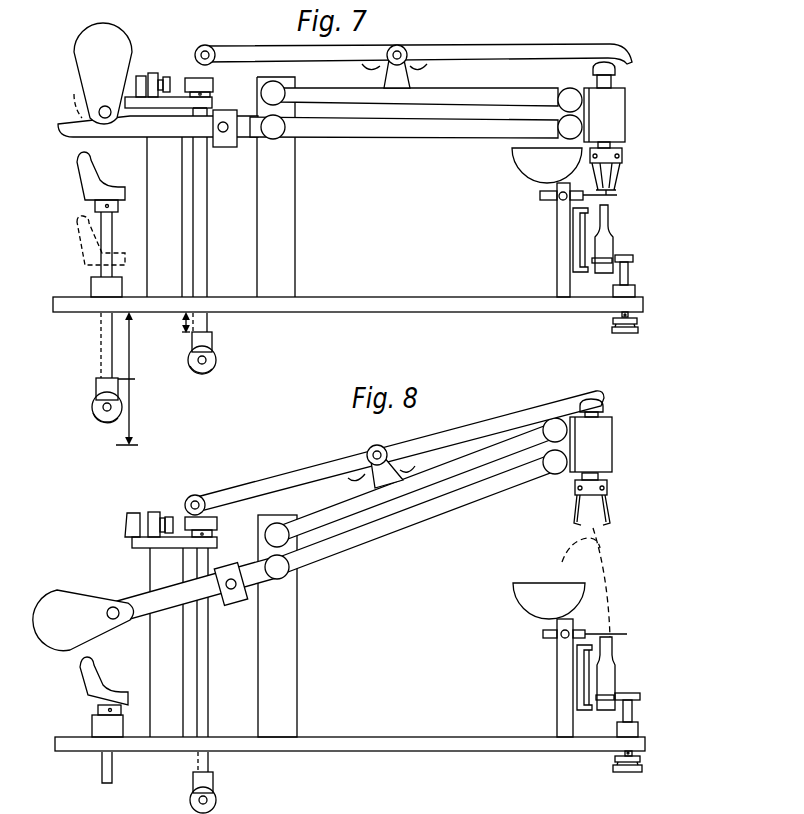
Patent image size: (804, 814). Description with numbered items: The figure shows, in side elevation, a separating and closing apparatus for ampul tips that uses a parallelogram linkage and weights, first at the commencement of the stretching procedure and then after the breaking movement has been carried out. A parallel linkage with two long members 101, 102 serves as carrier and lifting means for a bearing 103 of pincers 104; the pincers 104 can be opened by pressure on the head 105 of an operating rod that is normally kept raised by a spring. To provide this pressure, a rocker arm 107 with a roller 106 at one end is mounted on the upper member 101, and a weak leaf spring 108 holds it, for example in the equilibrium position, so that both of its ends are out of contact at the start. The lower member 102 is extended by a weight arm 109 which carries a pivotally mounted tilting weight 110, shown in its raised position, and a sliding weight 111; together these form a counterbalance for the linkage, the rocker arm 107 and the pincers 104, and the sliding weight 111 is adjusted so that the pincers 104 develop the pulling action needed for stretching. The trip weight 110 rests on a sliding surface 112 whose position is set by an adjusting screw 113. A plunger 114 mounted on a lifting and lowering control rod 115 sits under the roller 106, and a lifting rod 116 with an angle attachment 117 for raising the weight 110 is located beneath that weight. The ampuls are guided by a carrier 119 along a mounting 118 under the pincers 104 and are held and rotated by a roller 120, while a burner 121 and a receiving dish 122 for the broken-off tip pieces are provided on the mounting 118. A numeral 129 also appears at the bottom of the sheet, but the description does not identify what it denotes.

In FIG. 7, the upper member 101 is at (485, 96).
In FIG. 8, the upper member 101 is at (331, 508).
In FIG. 7, the lower member 102 is at (456, 132).
In FIG. 8, the lower member 102 is at (347, 547).
In FIG. 7, the bearing 103 is at (626, 114).
In FIG. 8, the bearing 103 is at (613, 441).
In FIG. 7, the pincers 104 is at (622, 182).
In FIG. 8, the pincers 104 is at (611, 512).
In FIG. 7, the head 105 is at (617, 72).
In FIG. 8, the head 105 is at (605, 403).
In FIG. 7, the roller 106 is at (207, 47).
In FIG. 8, the roller 106 is at (198, 494).
In FIG. 7, the rocker arm 107 is at (543, 46).
In FIG. 8, the rocker arm 107 is at (327, 458).
In FIG. 7, the leaf spring 108 is at (418, 64).
In FIG. 8, the leaf spring 108 is at (393, 450).
In FIG. 7, the weight arm 109 is at (133, 132).
In FIG. 8, the weight arm 109 is at (195, 590).
In FIG. 7, the tilting weight 110 is at (80, 48).
In FIG. 8, the tilting weight 110 is at (63, 598).
In FIG. 7, the sliding weight 111 is at (228, 148).
In FIG. 8, the sliding weight 111 is at (230, 584).
In FIG. 7, the sliding surface 112 is at (137, 76).
In FIG. 8, the sliding surface 112 is at (134, 514).
In FIG. 7, the adjusting screw 113 is at (168, 76).
In FIG. 8, the adjusting screw 113 is at (167, 512).
In FIG. 7, the plunger 114 is at (214, 83).
In FIG. 8, the plunger 114 is at (217, 521).
In FIG. 7, the control rod 115 is at (206, 233).
In FIG. 8, the control rod 115 is at (208, 660).
In FIG. 7, the lifting rod 116 is at (112, 233).
In FIG. 8, the lifting rod 116 is at (114, 770).
In FIG. 7, the angle attachment 117 is at (78, 158).
In FIG. 8, the angle attachment 117 is at (80, 680).
In FIG. 7, the mounting 118 is at (557, 252).
In FIG. 8, the mounting 118 is at (557, 699).
In FIG. 7, the carrier 119 is at (597, 274).
In FIG. 8, the carrier 119 is at (597, 712).
In FIG. 7, the roller 120 is at (634, 259).
In FIG. 8, the roller 120 is at (637, 693).
In FIG. 7, the burner 121 is at (540, 197).
In FIG. 8, the burner 121 is at (540, 636).
In FIG. 7, the receiving dish 122 is at (524, 165).
In FIG. 8, the receiving dish 122 is at (525, 592).
In FIG. 8, the base 129 is at (477, 806).